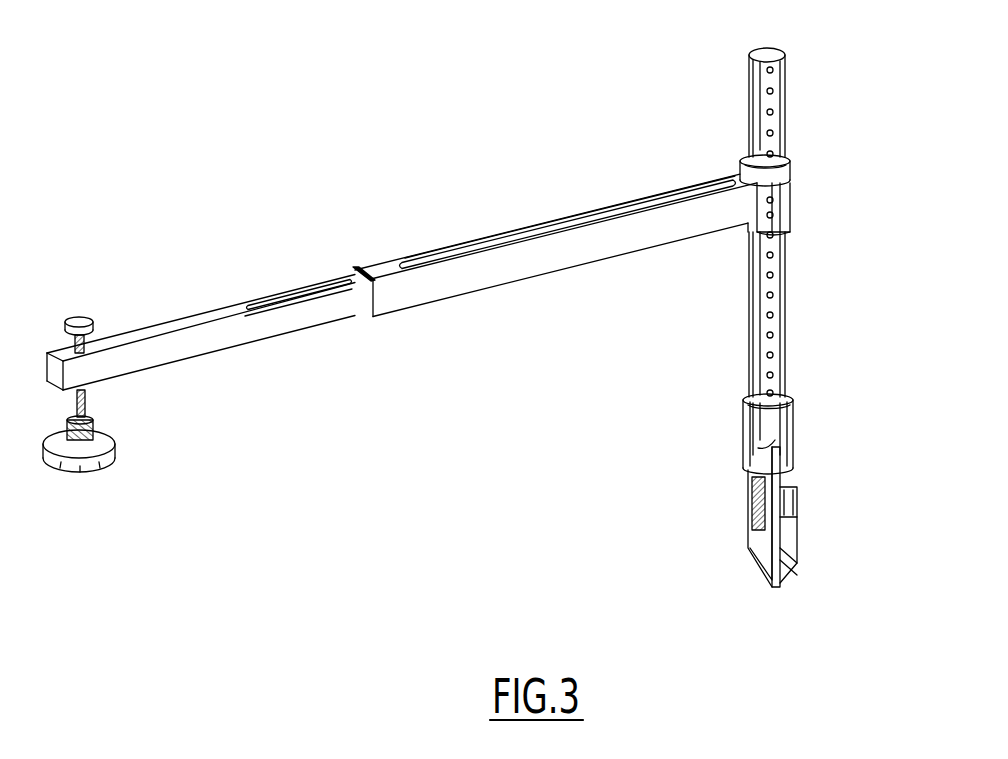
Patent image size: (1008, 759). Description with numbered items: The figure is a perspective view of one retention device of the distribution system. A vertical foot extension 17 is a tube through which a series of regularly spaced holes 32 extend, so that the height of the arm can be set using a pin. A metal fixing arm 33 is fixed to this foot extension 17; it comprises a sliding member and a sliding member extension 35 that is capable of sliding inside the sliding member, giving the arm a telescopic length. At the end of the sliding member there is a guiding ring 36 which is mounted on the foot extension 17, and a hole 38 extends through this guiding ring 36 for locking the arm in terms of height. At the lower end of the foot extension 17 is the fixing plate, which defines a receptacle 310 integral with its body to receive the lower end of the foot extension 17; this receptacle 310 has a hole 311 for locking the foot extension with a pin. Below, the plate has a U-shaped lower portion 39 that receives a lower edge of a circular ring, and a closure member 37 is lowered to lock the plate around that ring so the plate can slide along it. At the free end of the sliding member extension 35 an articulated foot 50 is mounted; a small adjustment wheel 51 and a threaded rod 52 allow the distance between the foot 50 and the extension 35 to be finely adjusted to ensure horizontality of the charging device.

The foot extension 17 is at (787, 323).
The holes 32 is at (748, 152).
The fixing arm 33 is at (402, 288).
The sliding member extension 35 is at (205, 318).
The guiding ring 36 is at (792, 210).
The closure member 37 is at (748, 483).
The hole 38 is at (790, 180).
The lower portion 39 is at (800, 560).
The articulated foot 50 is at (118, 460).
The adjustment wheel 51 is at (80, 316).
The threaded rod 52 is at (85, 395).
The receptacle 310 is at (790, 443).
The hole 311 is at (742, 450).